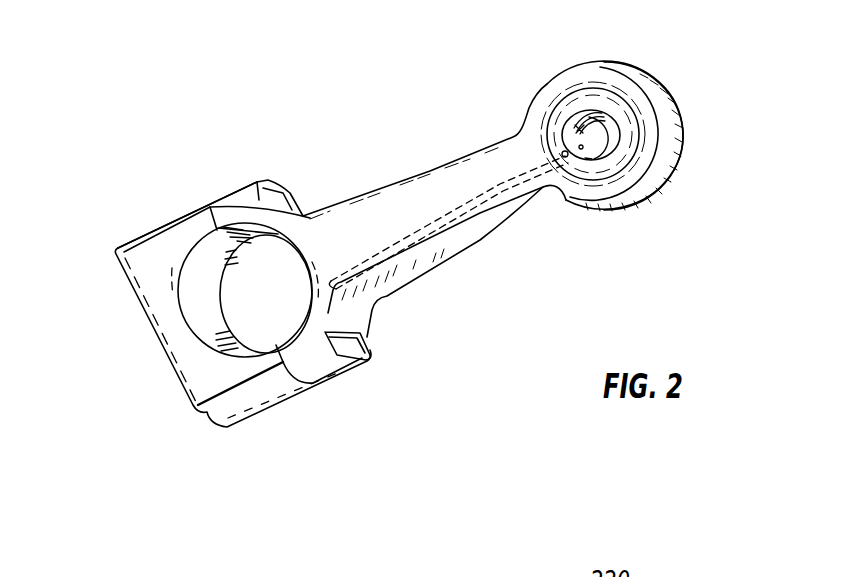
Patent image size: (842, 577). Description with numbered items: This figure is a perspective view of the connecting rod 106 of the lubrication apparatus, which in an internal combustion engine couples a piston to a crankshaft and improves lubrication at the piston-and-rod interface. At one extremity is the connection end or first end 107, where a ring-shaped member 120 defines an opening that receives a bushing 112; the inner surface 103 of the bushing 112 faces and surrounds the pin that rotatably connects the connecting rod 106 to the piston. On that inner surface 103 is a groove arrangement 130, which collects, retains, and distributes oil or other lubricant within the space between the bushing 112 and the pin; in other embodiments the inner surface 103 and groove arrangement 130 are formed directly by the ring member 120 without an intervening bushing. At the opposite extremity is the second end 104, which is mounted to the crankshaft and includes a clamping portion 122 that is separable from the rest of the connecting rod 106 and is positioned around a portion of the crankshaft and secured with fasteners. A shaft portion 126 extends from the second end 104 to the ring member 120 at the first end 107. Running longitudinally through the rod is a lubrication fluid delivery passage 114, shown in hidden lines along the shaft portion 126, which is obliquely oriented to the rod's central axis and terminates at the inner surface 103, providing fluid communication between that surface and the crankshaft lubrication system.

The inner surface 103 is at (590, 138).
The second end 104 is at (158, 338).
The connecting rod 106 is at (715, 92).
The first end 107 is at (690, 137).
The bushing 112 is at (601, 172).
The lubrication fluid delivery passage 114 is at (478, 204).
The ring-shaped member 120 is at (572, 76).
The clamping portion 122 is at (178, 220).
The shaft portion 126 is at (447, 247).
The groove arrangement 130 is at (576, 106).